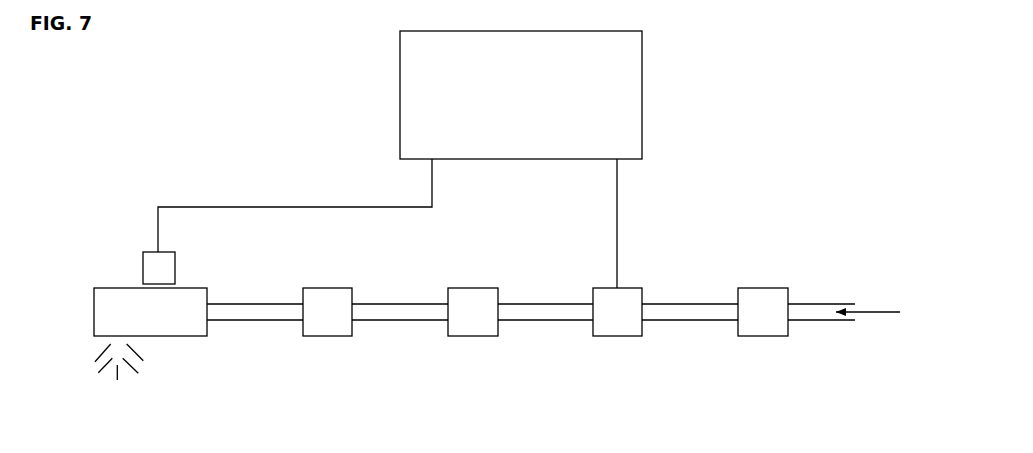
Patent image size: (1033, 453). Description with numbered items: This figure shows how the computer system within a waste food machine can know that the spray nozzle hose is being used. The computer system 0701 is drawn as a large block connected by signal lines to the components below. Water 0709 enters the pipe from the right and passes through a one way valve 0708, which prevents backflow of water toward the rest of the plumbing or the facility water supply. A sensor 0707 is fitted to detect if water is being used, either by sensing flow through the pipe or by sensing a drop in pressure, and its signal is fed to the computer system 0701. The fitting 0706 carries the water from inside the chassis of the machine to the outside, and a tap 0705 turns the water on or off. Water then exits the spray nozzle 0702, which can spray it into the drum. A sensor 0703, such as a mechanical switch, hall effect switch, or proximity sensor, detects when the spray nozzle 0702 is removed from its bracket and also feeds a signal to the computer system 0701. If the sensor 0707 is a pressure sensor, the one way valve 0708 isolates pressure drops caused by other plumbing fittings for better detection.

The computer system 0701 is at (432, 95).
The spray nozzle 0702 is at (158, 322).
The sensor 0703 is at (157, 272).
The tap 0705 is at (320, 322).
The fitting 0706 is at (465, 322).
The sensor 0707 is at (609, 322).
The one way valve 0708 is at (755, 323).
The water 0709 is at (891, 312).